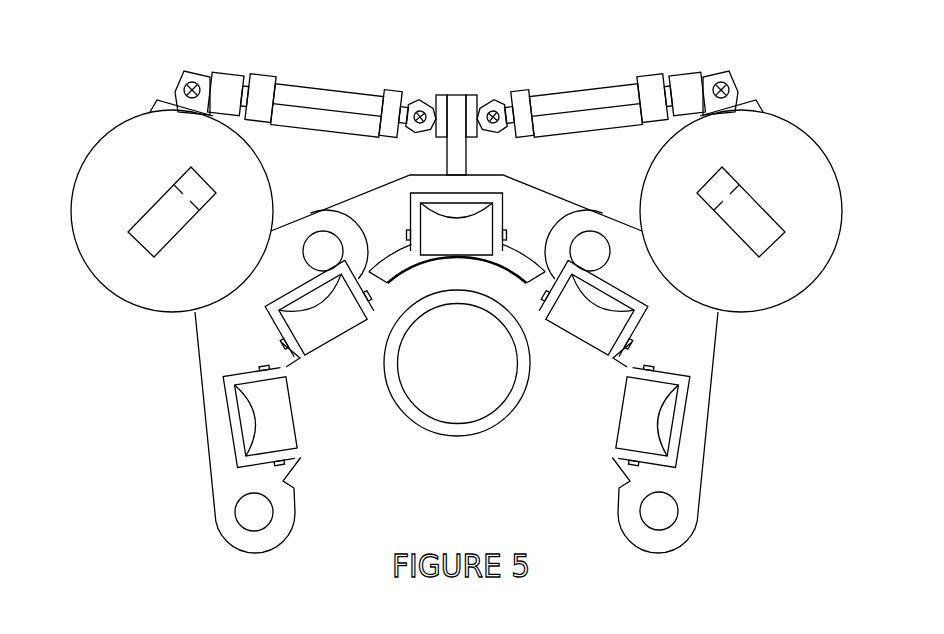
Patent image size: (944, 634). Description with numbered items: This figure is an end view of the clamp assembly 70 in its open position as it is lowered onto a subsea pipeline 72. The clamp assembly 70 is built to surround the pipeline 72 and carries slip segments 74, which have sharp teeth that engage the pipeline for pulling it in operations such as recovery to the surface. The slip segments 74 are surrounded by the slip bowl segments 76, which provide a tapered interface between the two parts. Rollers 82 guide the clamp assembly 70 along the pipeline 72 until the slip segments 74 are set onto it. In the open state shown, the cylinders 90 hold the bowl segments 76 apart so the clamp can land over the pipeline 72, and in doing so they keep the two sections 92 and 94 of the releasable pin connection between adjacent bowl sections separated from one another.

The clamp assembly 70 is at (588, 504).
The subsea pipeline 72 is at (475, 437).
The slip segments 74 is at (288, 375).
The slip bowl segments 76 is at (350, 202).
The rollers 82 is at (327, 338).
The cylinders 90 is at (334, 94).
The section of the pin connection 92 is at (262, 541).
The section of the pin connection 94 is at (673, 546).